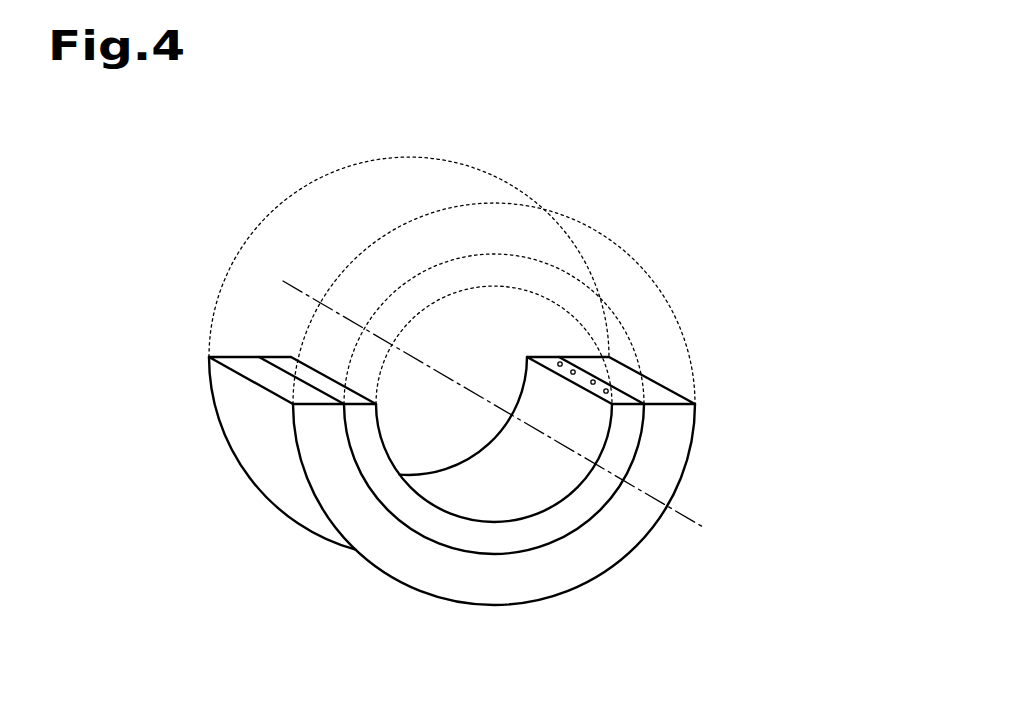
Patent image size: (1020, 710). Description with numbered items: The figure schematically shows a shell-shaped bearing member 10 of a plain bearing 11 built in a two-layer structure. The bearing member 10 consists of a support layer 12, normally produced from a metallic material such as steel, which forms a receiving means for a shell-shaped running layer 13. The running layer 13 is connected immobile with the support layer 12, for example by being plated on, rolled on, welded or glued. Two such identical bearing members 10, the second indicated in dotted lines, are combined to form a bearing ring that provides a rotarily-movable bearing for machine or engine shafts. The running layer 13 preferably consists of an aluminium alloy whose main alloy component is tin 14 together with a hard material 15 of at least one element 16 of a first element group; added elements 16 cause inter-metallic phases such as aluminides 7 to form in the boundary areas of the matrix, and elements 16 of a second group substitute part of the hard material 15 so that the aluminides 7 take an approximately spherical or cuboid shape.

The aluminides 7 is at (606, 391).
The bearing member 10 is at (745, 479).
The plain bearing 11 is at (743, 517).
The support layer 12 is at (598, 549).
The running layer 13 is at (412, 513).
The tin 14 is at (560, 364).
The hard material 15 is at (573, 372).
The element 16 is at (593, 382).